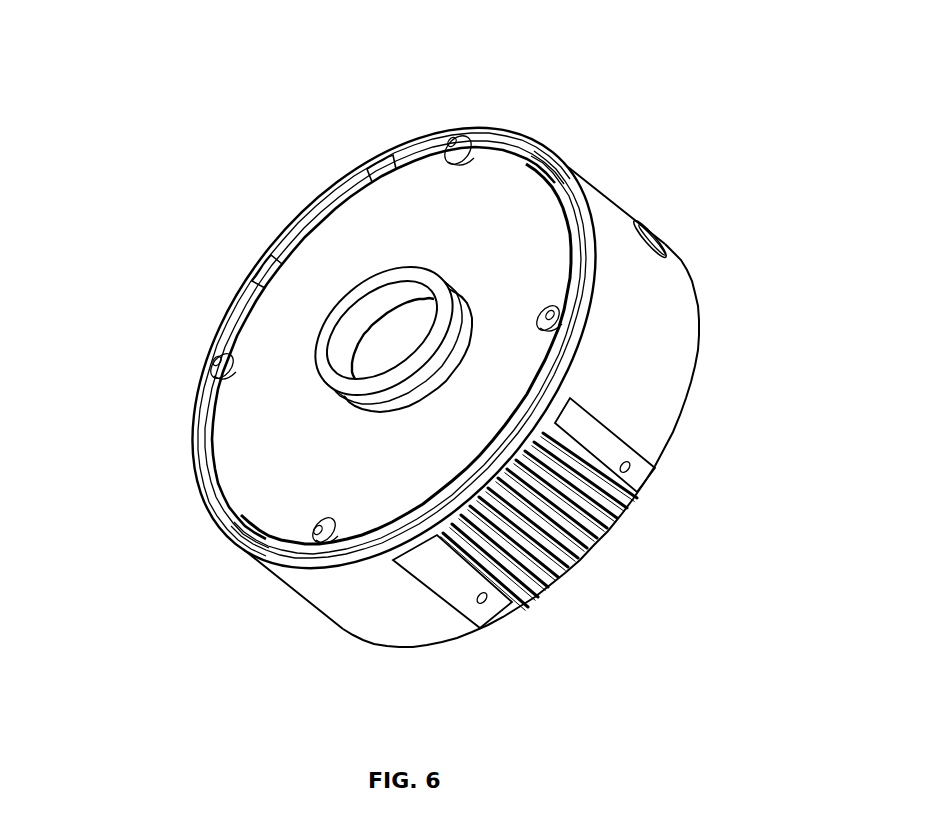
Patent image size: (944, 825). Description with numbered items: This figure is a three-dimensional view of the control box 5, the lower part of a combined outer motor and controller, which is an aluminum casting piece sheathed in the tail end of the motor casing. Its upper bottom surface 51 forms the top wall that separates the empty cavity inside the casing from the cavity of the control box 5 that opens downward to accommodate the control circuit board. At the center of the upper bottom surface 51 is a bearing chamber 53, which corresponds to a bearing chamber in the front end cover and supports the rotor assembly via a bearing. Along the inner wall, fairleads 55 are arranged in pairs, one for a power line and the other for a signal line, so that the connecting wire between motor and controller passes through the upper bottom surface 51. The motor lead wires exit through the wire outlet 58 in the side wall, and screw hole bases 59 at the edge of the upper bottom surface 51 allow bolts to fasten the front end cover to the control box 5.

The control box 5 is at (453, 130).
The upper bottom surface 51 is at (295, 438).
The bearing chamber 53 is at (435, 325).
The fairlead 55 is at (377, 178).
The wire outlet 58 is at (658, 228).
The screw hole base 59 is at (200, 368).